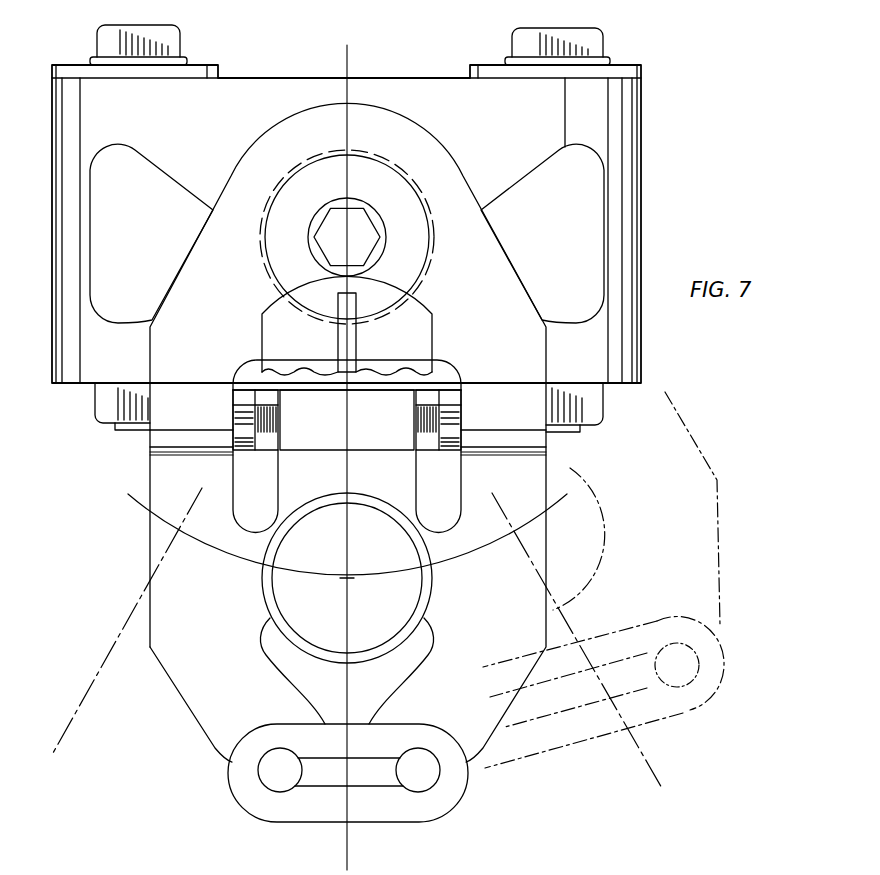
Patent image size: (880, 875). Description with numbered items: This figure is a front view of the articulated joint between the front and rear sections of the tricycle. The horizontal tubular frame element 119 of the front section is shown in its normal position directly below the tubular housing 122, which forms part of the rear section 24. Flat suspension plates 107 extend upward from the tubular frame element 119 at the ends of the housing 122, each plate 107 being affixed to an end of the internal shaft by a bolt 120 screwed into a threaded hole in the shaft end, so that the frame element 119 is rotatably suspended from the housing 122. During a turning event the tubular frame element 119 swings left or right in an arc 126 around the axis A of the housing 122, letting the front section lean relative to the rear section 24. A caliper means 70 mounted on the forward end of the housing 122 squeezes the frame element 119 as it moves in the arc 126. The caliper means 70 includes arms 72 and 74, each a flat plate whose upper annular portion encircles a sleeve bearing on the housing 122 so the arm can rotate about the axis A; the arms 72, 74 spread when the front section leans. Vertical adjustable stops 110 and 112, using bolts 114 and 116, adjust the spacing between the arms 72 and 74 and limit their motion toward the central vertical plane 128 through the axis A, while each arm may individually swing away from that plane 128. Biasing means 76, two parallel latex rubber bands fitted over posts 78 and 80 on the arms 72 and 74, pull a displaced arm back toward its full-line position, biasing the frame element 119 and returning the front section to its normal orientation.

The caliper means 70 is at (407, 63).
The rear section 24 is at (440, 196).
The suspension plate 107 is at (262, 332).
The bolt 120 is at (363, 215).
The tubular housing 122 is at (262, 217).
The axis A is at (347, 237).
The arm 74 is at (160, 437).
The bolt 114 is at (258, 440).
The bolt 116 is at (432, 442).
The vertical adjustable stop 110 is at (248, 464).
The vertical adjustable stop 112 is at (443, 464).
The arc 126 is at (232, 558).
The tubular frame element 119 is at (432, 596).
The central vertical plane 128 is at (347, 612).
The biasing means 76 is at (264, 806).
The post 78 is at (430, 777).
The post 80 is at (270, 768).
The arm 72 is at (688, 456).